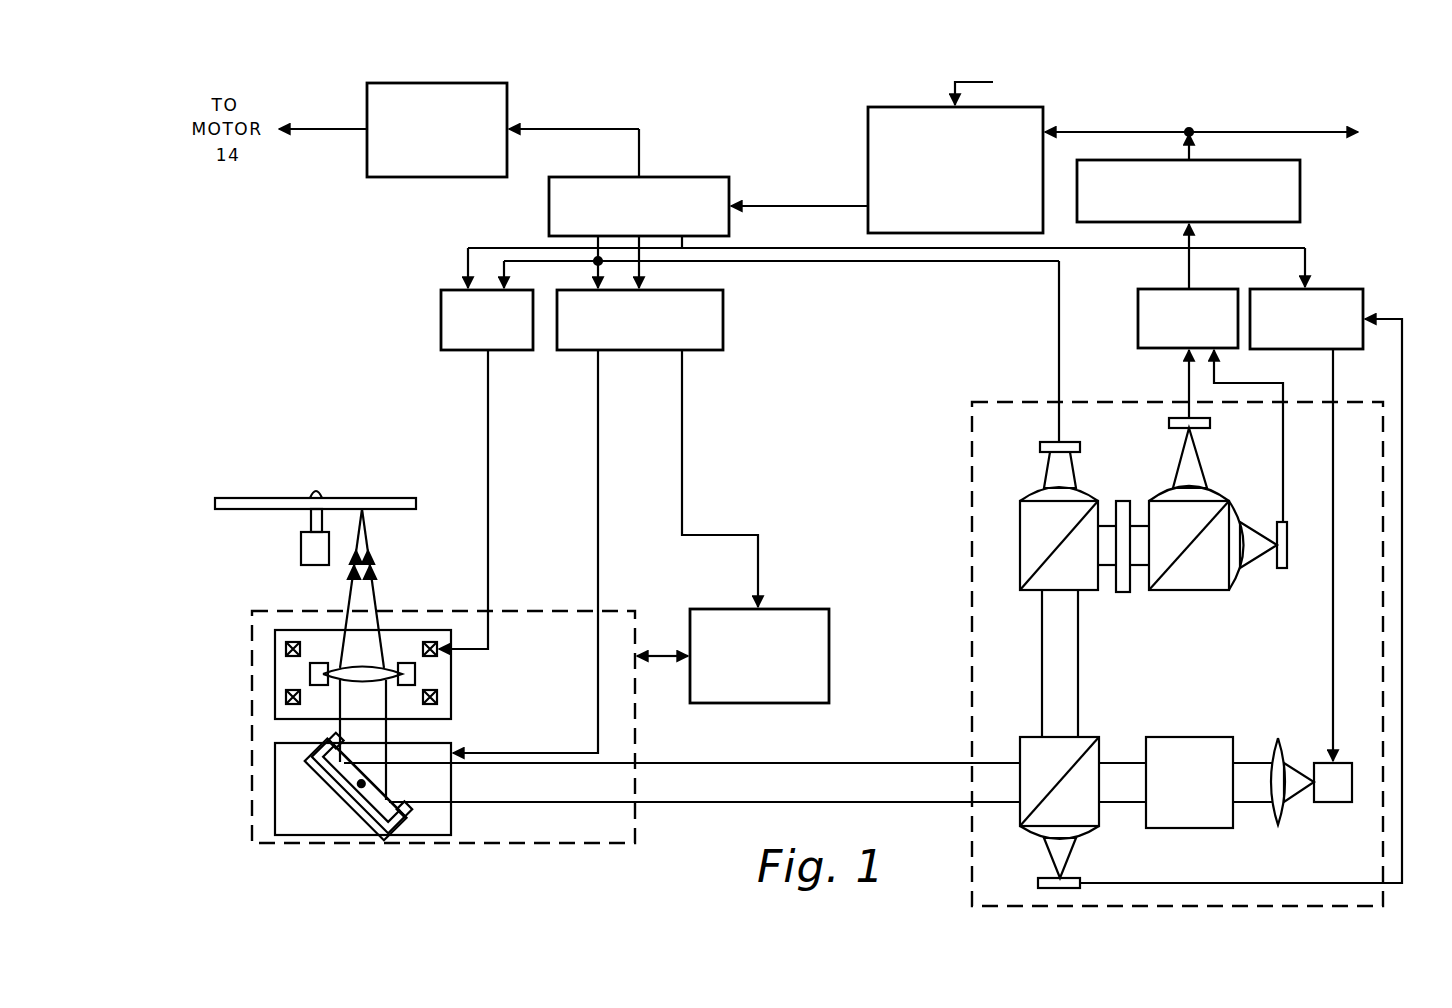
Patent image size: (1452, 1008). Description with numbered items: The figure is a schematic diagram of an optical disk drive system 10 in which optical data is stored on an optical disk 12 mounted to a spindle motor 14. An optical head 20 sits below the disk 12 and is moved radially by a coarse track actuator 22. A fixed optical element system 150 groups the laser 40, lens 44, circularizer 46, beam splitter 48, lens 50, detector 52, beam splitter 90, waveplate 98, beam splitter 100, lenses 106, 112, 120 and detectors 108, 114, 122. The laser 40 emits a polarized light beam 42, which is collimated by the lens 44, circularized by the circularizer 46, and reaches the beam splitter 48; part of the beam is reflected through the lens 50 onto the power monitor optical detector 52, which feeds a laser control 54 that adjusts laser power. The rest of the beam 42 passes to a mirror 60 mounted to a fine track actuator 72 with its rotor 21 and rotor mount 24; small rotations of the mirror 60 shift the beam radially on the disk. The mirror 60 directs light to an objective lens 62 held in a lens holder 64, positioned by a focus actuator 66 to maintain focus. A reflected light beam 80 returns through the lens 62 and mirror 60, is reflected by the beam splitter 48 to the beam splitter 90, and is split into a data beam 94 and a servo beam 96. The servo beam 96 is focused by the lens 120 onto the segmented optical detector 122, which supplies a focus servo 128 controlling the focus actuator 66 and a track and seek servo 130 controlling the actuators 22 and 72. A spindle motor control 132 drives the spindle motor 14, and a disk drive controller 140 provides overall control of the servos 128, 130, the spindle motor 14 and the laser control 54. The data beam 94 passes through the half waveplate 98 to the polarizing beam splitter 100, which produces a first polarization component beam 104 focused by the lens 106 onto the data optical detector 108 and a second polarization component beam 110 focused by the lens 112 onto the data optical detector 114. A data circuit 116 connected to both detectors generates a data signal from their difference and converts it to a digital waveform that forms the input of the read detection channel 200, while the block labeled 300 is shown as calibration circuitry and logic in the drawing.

The optical disk drive system 10 is at (503, 862).
The optical disk 12 is at (247, 498).
The spindle motor 14 is at (301, 546).
The optical head 20 is at (252, 695).
The rotor 21 is at (388, 795).
The coarse track actuator 22 is at (808, 609).
The rotor mount 24 is at (335, 792).
The laser 40 is at (1337, 802).
The light beam 42 is at (1292, 797).
The lens 44 is at (1276, 822).
The circularizer 46 is at (1178, 737).
The beam splitter 48 is at (1054, 774).
The lens 50 is at (1084, 838).
The power monitor optical detector 52 is at (1048, 870).
The laser control 54 is at (1363, 306).
The mirror 60 is at (302, 754).
The objective lens 62 is at (390, 668).
The lens holder 64 is at (425, 700).
The focus actuator 66 is at (437, 652).
The fine track actuator 72 is at (451, 823).
The light beam 80 is at (372, 573).
The beam splitter 90 is at (1054, 538).
The data beam 94 is at (1105, 567).
The servo beam 96 is at (1048, 470).
The half waveplate 98 is at (1120, 501).
The polarizing beam splitter 100 is at (1194, 538).
The first polarization component beam 104 is at (1200, 462).
The lens 106 is at (1214, 492).
The data optical detector 108 is at (1210, 424).
The second polarization component beam 110 is at (1262, 558).
The lens 112 is at (1236, 582).
The data optical detector 114 is at (1287, 540).
The data circuit 116 is at (1138, 318).
The lens 120 is at (1096, 492).
The segmented optical detector 122 is at (1080, 446).
The focus servo 128 is at (441, 318).
The track and seek servo 130 is at (723, 318).
The spindle motor control 132 is at (507, 108).
The disk drive controller 140 is at (703, 177).
The fixed optical element system 150 is at (1010, 402).
The read detection channel 200 is at (1300, 192).
The calibration circuitry and logic 300 is at (868, 150).